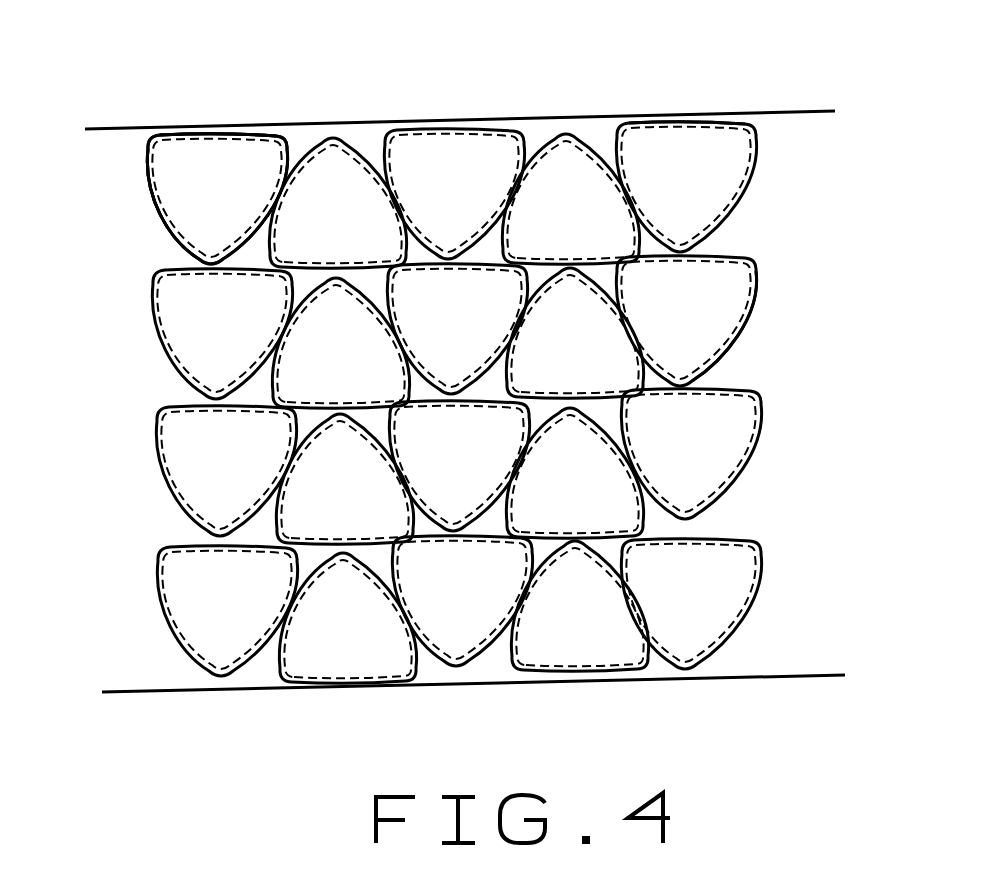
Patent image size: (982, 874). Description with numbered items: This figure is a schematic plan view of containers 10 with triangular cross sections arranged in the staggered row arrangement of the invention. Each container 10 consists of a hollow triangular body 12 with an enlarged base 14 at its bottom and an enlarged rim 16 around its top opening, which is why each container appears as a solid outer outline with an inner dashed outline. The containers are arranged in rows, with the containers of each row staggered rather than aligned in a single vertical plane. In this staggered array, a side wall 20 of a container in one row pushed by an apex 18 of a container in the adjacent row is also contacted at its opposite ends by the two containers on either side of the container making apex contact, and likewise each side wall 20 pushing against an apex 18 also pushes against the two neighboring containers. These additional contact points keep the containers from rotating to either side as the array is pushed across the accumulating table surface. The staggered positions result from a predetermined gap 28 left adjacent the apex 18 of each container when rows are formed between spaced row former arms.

The container 10 is at (207, 183).
The hollow triangular body 12 is at (147, 178).
The enlarged base 14 is at (165, 215).
The enlarged rim 16 is at (177, 240).
The apex 18 is at (335, 137).
The side wall 20 is at (220, 125).
The gap 28 is at (356, 134).